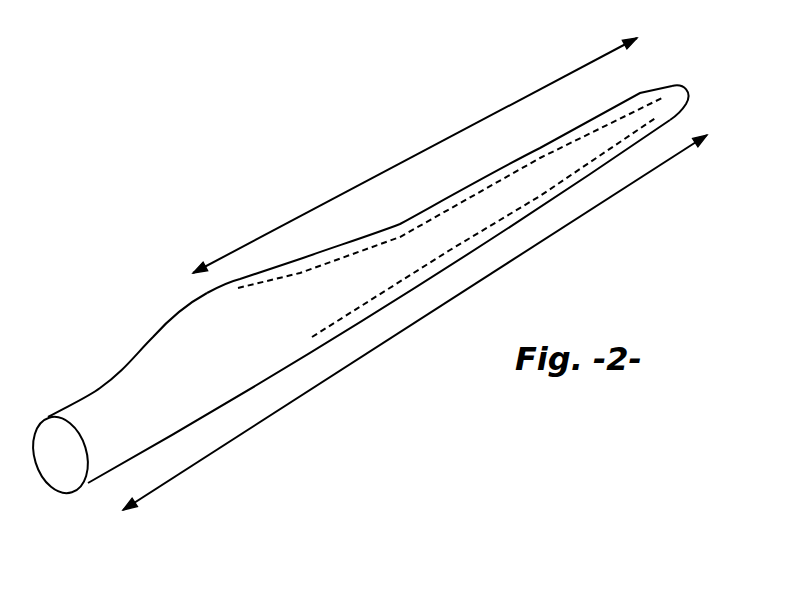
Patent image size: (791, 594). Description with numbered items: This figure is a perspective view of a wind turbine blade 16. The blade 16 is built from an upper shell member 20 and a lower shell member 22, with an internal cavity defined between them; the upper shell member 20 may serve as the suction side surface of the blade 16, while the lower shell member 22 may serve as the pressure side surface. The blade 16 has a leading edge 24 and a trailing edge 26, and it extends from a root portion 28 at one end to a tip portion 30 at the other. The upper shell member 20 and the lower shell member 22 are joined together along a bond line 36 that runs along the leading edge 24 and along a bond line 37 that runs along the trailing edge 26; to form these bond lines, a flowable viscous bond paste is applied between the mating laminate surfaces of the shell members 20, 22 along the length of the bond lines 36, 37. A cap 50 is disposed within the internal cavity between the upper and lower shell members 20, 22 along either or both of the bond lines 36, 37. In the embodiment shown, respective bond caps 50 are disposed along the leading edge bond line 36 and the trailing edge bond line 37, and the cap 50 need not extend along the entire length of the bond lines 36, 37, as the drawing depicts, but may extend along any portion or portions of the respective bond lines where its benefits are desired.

The wind turbine blade 16 is at (333, 157).
The upper shell member 20 is at (207, 350).
The lower shell member 22 is at (277, 337).
The leading edge 24 is at (445, 270).
The trailing edge 26 is at (462, 192).
The root portion 28 is at (95, 418).
The tip portion 30 is at (666, 100).
The bond line 36 is at (558, 233).
The bond line 37 is at (313, 210).
The cap 50 is at (507, 178).